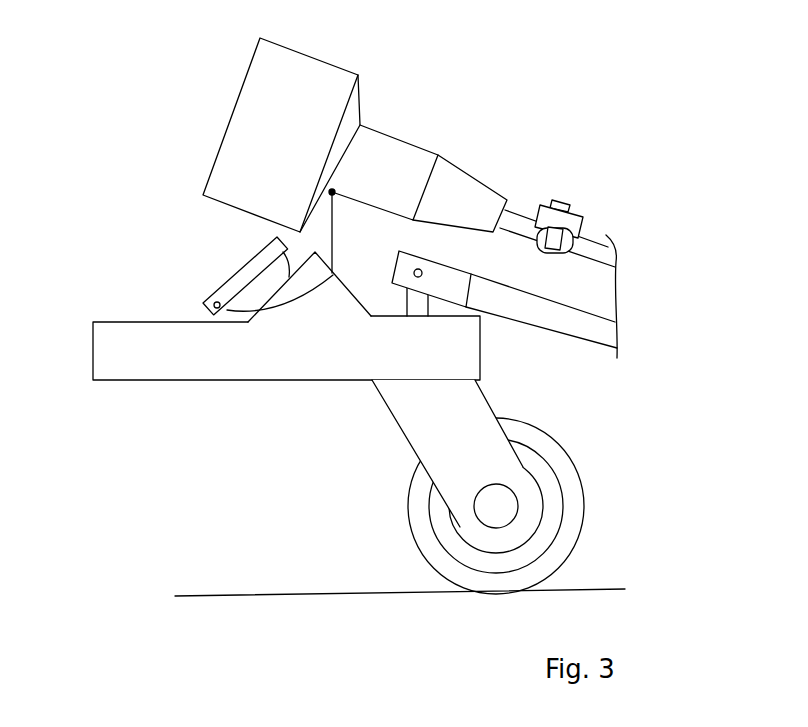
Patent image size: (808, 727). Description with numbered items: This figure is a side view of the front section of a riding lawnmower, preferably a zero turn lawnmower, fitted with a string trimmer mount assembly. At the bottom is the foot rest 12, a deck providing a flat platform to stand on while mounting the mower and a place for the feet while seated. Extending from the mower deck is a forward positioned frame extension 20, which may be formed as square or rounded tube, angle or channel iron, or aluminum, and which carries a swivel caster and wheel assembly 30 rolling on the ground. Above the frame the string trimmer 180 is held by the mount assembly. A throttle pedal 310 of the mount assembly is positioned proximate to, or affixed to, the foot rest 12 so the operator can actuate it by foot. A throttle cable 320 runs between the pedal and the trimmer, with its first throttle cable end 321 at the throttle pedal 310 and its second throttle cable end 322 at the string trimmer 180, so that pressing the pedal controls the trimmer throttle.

The foot rest 12 is at (146, 343).
The forward positioned frame extension 20 is at (352, 362).
The swivel caster and wheel assembly 30 is at (604, 448).
The string trimmer 180 is at (248, 127).
The throttle pedal 310 is at (240, 268).
The throttle cable 320 is at (336, 245).
The first throttle cable end 321 is at (225, 300).
The second throttle cable end 322 is at (334, 197).